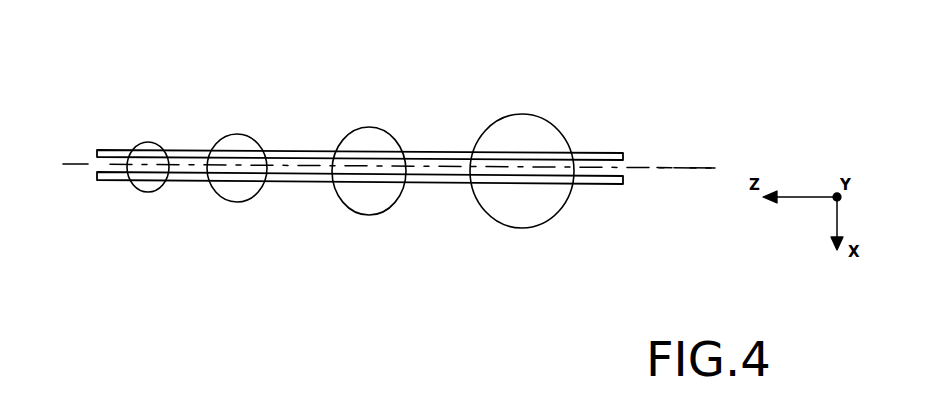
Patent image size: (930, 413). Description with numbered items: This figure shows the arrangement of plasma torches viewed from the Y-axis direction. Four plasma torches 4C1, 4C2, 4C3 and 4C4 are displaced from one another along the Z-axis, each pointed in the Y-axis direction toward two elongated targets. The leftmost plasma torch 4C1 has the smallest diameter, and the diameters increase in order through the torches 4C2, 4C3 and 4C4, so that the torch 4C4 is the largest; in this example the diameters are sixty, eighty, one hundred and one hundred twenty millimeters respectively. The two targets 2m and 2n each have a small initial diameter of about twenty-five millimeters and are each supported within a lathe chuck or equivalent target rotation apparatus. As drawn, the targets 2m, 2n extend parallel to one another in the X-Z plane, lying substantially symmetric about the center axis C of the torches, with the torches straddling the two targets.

The plasma torch 4C1 is at (148, 148).
The plasma torch 4C2 is at (245, 135).
The plasma torch 4C3 is at (378, 122).
The plasma torch 4C4 is at (537, 111).
The target 2m is at (598, 153).
The target 2n is at (623, 184).
The center axis C is at (691, 165).